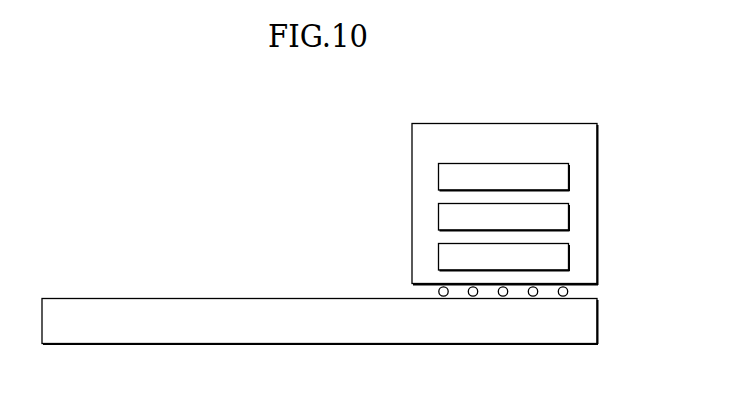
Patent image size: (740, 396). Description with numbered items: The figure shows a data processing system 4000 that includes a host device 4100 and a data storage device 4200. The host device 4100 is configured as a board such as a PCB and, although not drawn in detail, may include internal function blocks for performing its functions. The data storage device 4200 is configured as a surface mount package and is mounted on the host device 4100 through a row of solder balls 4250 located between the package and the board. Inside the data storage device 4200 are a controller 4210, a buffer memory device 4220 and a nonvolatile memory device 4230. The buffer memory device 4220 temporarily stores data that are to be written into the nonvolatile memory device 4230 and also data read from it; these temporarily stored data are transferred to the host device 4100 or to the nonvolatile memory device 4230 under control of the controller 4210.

The data processing system 4000 is at (115, 96).
The host device 4100 is at (320, 322).
The data storage device 4200 is at (505, 205).
The controller 4210 is at (504, 178).
The buffer memory device 4220 is at (504, 218).
The nonvolatile memory device 4230 is at (504, 258).
The solder balls 4250 is at (577, 290).